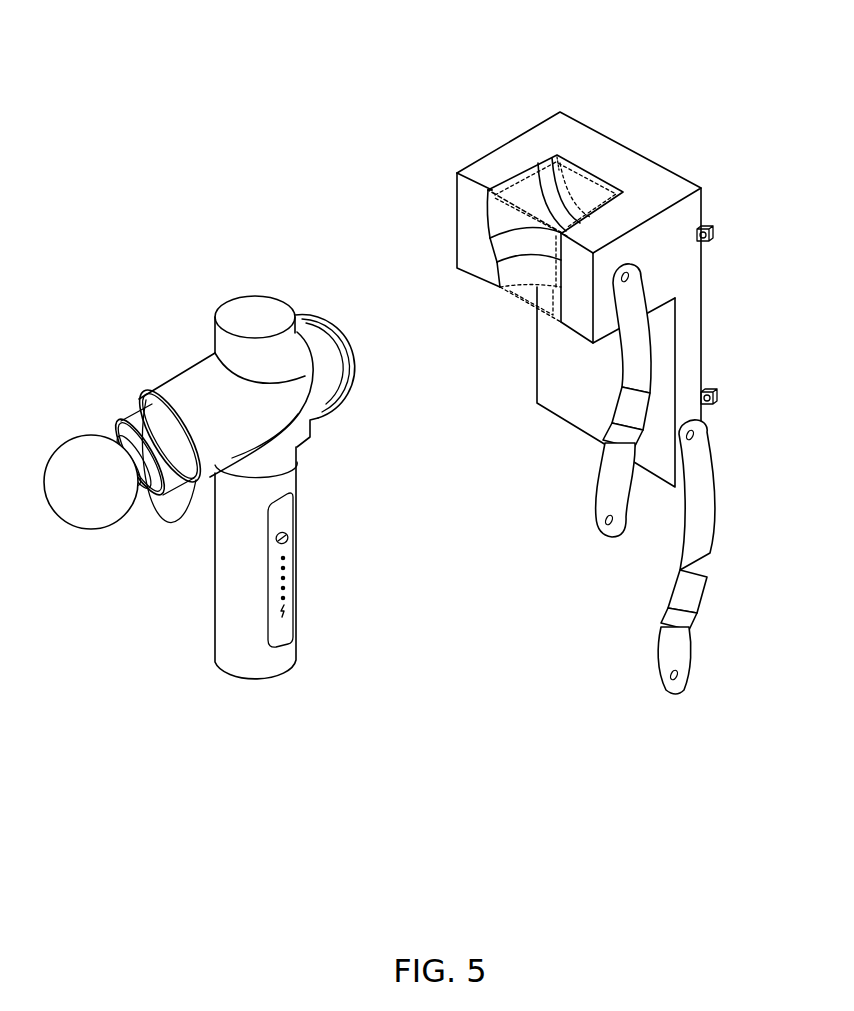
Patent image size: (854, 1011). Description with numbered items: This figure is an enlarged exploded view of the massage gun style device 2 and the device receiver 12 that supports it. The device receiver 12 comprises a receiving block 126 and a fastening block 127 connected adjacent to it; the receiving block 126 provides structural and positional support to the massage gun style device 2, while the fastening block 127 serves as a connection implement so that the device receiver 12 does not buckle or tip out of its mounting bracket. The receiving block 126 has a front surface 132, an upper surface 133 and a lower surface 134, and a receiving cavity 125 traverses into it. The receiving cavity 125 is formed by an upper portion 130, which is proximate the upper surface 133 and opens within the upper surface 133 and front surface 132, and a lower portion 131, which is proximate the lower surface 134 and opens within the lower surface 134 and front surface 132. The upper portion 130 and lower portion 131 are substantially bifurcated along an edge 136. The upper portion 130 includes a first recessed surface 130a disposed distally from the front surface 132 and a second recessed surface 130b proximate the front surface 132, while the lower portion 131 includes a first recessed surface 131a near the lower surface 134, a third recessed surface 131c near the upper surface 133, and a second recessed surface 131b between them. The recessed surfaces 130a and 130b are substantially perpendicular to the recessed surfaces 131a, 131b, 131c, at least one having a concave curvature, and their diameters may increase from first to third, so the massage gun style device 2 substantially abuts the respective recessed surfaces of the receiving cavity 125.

The massage gun style device 2 is at (200, 567).
The device receiver 12 is at (564, 356).
The receiving cavity 125 is at (460, 336).
The receiving block 126 is at (564, 250).
The fastening block 127 is at (577, 410).
The upper portion 130 is at (617, 142).
The first recessed surface 130a is at (565, 192).
The second recessed surface 130b is at (521, 190).
The lower portion 131 is at (460, 336).
The first recessed surface 131a is at (522, 273).
The second recessed surface 131b is at (503, 247).
The third recessed surface 131c is at (498, 218).
The front surface 132 is at (467, 210).
The upper surface 133 is at (672, 188).
The lower surface 134 is at (658, 307).
The edge 136 is at (503, 190).